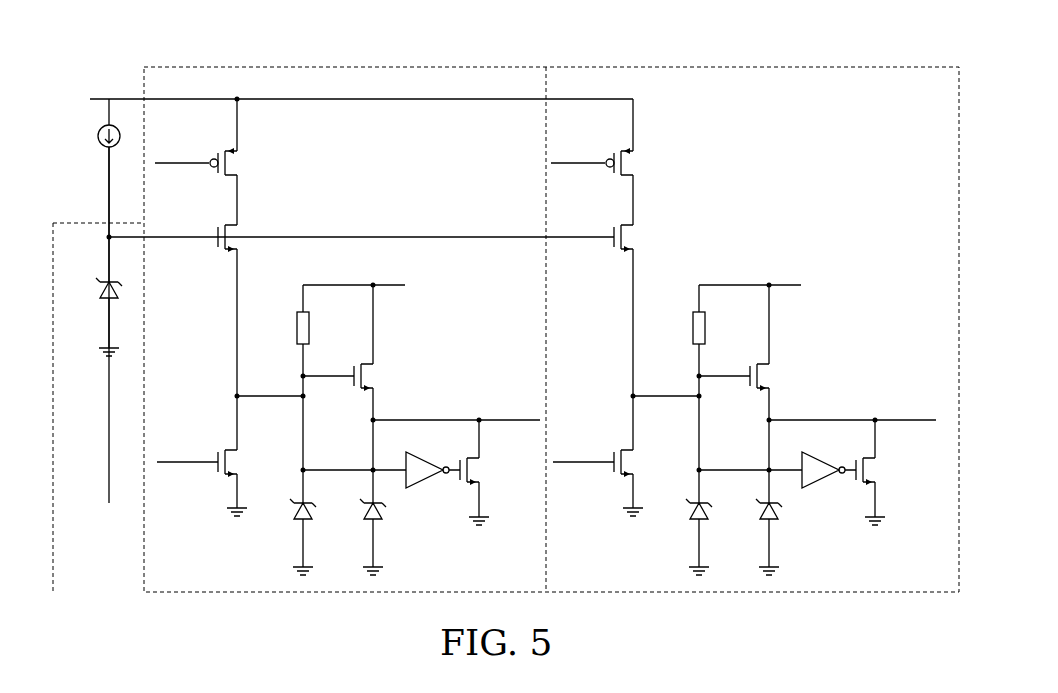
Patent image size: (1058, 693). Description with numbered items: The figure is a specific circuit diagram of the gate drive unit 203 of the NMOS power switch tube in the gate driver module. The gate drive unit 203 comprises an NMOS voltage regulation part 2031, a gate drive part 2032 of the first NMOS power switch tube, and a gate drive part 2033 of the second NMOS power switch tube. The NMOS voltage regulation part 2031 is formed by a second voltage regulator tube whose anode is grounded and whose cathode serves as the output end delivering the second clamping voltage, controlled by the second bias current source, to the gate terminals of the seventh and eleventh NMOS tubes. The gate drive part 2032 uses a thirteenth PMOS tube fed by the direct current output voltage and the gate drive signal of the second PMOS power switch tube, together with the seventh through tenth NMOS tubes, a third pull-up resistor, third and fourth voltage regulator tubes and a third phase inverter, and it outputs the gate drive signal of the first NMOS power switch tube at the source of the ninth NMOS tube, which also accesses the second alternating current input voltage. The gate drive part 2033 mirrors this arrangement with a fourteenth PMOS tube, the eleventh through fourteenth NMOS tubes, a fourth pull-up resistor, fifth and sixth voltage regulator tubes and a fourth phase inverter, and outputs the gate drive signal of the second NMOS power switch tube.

The gate drive unit of the NMOS power switch tube 203 is at (534, 298).
The NMOS voltage regulation part 2031 is at (53, 223).
The gate drive part of the first NMOS power switch tube 2032 is at (343, 68).
The gate drive part of the second NMOS power switch tube 2033 is at (739, 68).